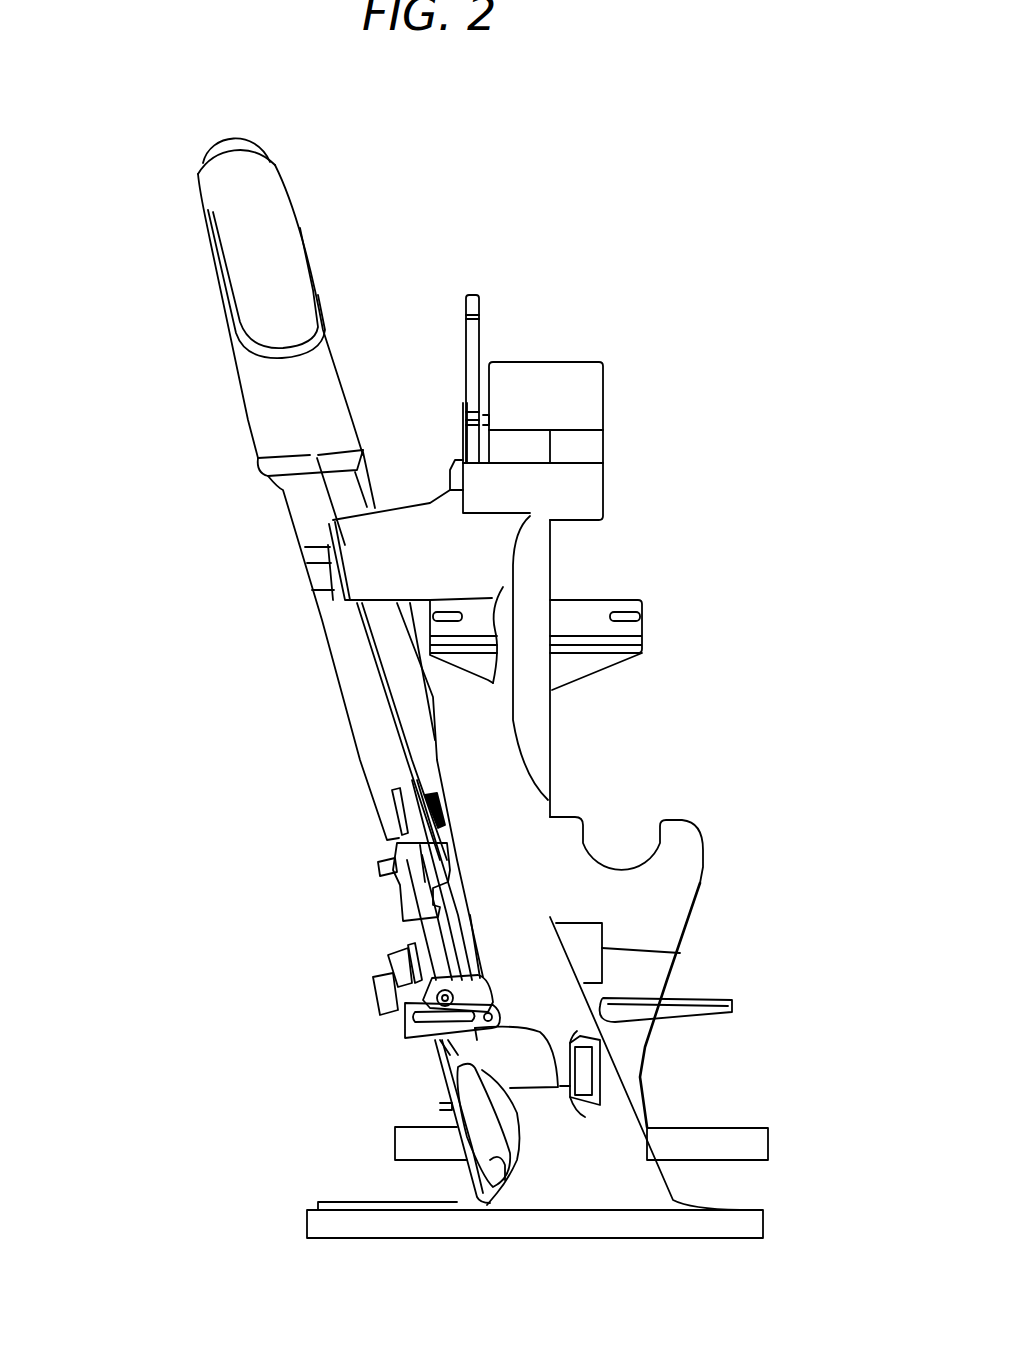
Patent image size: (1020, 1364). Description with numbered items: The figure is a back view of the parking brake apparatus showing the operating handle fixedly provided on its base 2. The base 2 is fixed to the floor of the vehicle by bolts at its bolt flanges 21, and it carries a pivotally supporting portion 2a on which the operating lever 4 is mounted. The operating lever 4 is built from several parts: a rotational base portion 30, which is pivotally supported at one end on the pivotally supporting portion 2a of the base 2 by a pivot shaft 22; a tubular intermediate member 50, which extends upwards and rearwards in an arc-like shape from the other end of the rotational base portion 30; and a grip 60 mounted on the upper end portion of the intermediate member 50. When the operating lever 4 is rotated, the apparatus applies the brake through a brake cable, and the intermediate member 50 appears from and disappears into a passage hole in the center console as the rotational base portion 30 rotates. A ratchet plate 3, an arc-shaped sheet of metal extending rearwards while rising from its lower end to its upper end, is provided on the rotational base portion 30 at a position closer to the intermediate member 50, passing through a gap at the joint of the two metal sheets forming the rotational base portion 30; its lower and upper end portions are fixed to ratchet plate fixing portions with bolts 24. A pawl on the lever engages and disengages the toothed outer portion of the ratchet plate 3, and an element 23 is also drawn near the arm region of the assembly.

The base 2 is at (586, 232).
The pivotally supporting portion 2a is at (478, 953).
The ratchet plate 3 is at (398, 762).
The operating lever 4 is at (180, 361).
The bolt flanges 21 is at (740, 1133).
The pivot shaft 22 is at (380, 967).
The arm body 23 is at (407, 507).
The bolts 24 is at (306, 559).
The rotational base portion 30 is at (392, 885).
The intermediate member 50 is at (343, 667).
The grip 60 is at (290, 228).